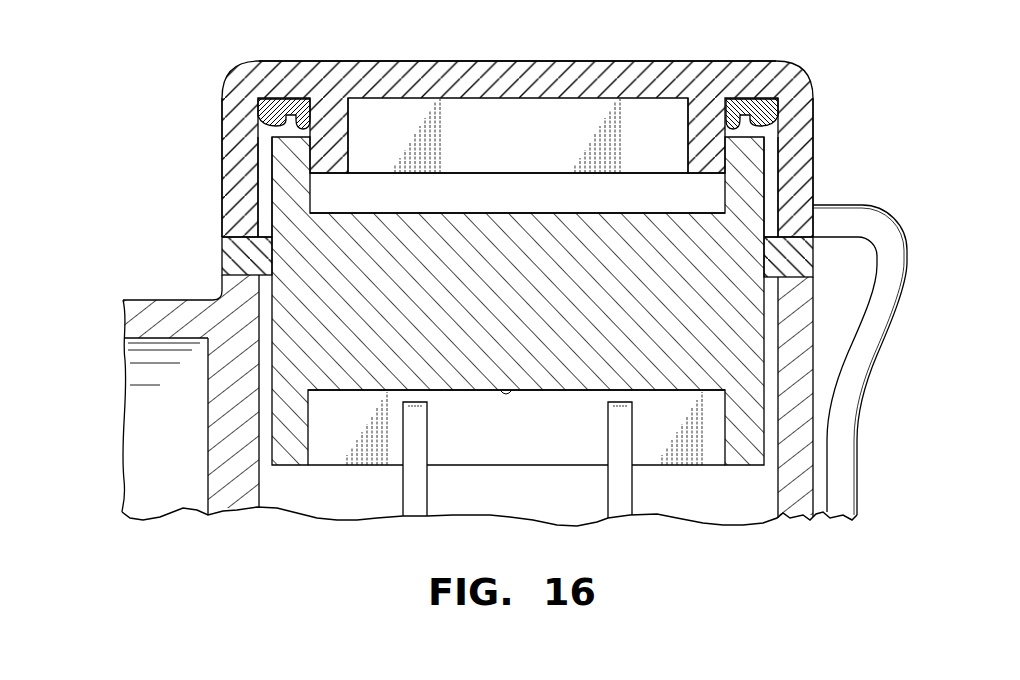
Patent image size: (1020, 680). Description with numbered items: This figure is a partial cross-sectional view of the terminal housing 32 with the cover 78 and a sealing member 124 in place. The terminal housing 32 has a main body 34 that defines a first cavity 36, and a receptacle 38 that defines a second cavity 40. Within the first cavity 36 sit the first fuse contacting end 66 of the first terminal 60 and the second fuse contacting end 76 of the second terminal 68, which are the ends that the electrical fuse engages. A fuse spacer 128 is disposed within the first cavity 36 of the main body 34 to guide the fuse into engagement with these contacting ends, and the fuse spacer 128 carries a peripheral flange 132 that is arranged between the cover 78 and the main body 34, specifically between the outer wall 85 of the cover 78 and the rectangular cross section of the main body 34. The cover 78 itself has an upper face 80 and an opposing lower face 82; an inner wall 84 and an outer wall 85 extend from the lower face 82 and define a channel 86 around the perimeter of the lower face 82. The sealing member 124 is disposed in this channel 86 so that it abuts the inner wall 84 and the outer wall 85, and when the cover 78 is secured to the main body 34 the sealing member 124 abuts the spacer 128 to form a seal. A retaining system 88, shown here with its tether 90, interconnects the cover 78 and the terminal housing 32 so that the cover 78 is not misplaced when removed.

The terminal housing 32 is at (233, 468).
The main body 34 is at (796, 500).
The first cavity 36 is at (348, 497).
The receptacle 38 is at (130, 314).
The second cavity 40 is at (100, 435).
The first terminal 60 is at (676, 480).
The first fuse contacting end 66 is at (620, 430).
The second terminal 68 is at (472, 480).
The second fuse contacting end 76 is at (418, 430).
The cover 78 is at (585, 77).
The upper face 80 is at (375, 61).
The lower face 82 is at (458, 102).
The inner wall 84 is at (327, 162).
The outer wall 85 is at (243, 157).
The channel 86 is at (264, 176).
The retaining system 88 is at (888, 338).
The tether 90 is at (868, 358).
The sealing member 124 is at (268, 118).
The fuse spacer 128 is at (540, 315).
The peripheral flange 132 is at (232, 253).